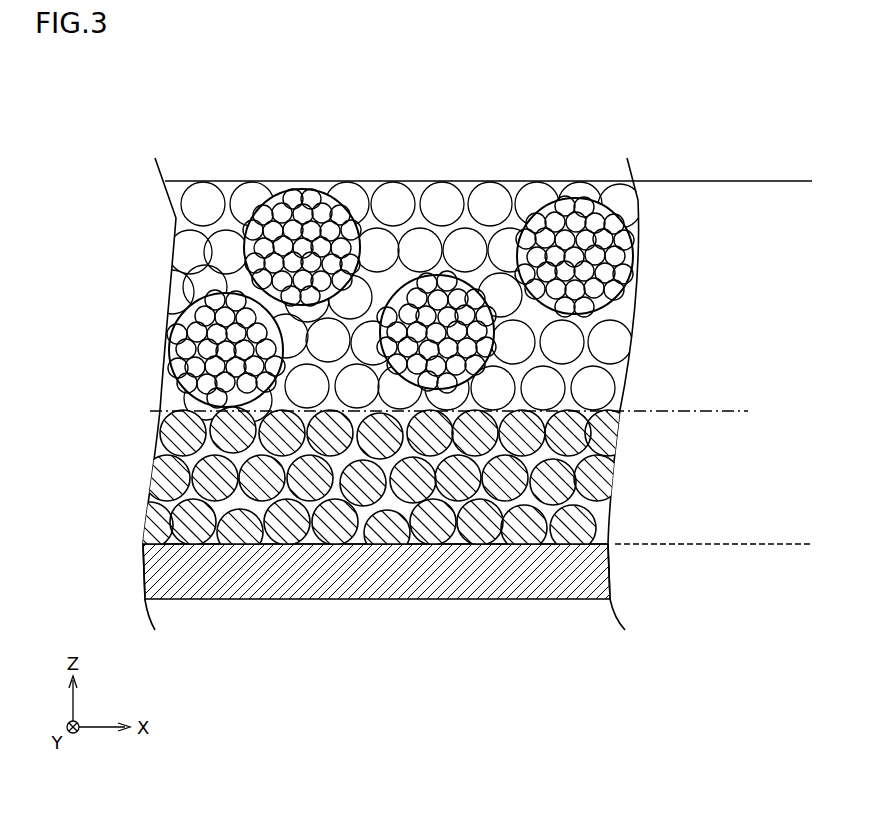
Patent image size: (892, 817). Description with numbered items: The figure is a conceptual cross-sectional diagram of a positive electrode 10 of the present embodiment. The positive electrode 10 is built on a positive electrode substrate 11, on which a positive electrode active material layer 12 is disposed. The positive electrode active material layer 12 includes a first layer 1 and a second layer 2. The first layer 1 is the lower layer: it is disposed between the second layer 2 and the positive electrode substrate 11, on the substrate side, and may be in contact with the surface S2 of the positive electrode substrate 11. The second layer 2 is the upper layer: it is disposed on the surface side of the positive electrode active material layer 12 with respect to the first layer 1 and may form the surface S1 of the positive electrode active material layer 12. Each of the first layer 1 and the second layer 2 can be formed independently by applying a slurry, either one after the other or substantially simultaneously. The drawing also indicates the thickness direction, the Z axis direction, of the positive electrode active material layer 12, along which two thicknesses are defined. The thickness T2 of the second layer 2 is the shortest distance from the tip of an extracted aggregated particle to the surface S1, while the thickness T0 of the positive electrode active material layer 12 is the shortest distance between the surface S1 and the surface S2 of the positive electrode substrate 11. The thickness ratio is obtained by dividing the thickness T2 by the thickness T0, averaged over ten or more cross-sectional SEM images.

The positive electrode 10 is at (116, 115).
The positive electrode substrate 11 is at (417, 600).
The positive electrode active material layer 12 is at (83, 193).
The first layer 1 is at (129, 406).
The second layer 2 is at (129, 193).
The surface of positive electrode active material layer S1 is at (570, 181).
The surface of positive electrode substrate S2 is at (553, 548).
The thickness of positive electrode active material layer T0 is at (782, 182).
The thickness of second layer T2 is at (680, 410).